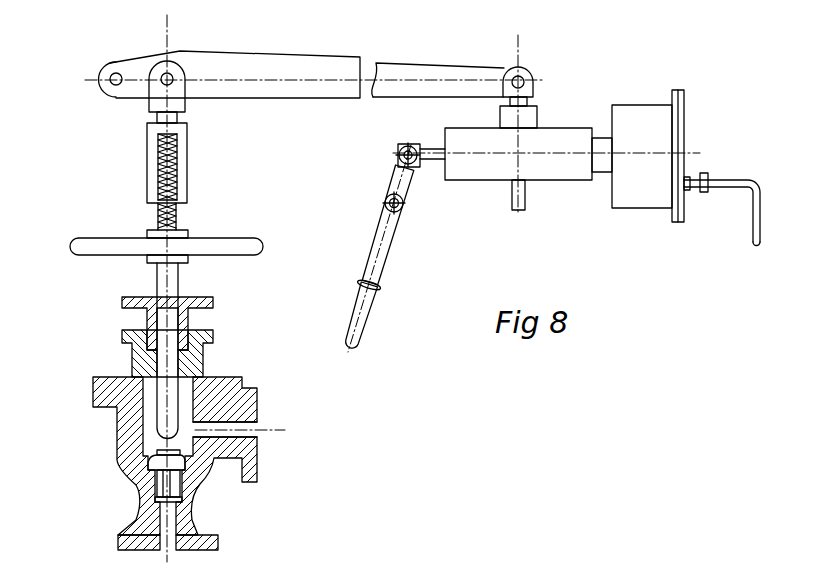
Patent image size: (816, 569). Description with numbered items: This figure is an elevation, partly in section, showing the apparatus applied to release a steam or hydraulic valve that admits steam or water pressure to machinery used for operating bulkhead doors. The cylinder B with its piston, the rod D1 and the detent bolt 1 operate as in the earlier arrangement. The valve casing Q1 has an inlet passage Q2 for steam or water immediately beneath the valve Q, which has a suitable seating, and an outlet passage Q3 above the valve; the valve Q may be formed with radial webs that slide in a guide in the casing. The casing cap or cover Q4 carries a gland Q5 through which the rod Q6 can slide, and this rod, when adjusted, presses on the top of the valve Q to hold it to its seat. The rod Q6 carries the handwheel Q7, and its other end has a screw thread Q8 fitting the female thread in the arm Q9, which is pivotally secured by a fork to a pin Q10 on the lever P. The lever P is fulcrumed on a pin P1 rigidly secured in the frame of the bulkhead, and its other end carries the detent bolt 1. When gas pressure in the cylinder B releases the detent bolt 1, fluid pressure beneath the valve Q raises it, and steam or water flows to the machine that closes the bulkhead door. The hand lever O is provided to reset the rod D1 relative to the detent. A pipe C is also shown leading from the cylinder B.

The lever P is at (257, 89).
The pin P1 is at (108, 62).
The pin Q10 is at (174, 72).
The arm Q9 is at (155, 143).
The screw thread Q8 is at (158, 217).
The handwheel Q7 is at (80, 244).
The rod Q6 is at (158, 282).
The gland Q5 is at (183, 319).
The valve casing cap Q4 is at (197, 359).
The valve casing Q1 is at (258, 397).
The outlet passage Q3 is at (245, 432).
The valve Q is at (160, 472).
The inlet passage Q2 is at (172, 525).
The rod D1 is at (430, 160).
The hand lever O is at (384, 261).
The detent bolt 1 is at (510, 207).
The cylinder B is at (643, 198).
The pipe C is at (755, 210).